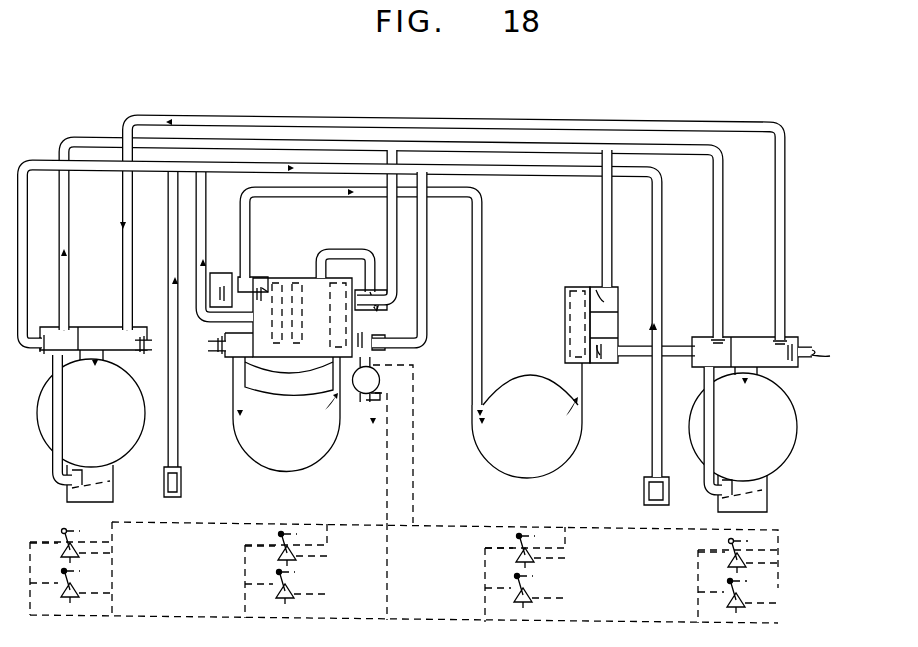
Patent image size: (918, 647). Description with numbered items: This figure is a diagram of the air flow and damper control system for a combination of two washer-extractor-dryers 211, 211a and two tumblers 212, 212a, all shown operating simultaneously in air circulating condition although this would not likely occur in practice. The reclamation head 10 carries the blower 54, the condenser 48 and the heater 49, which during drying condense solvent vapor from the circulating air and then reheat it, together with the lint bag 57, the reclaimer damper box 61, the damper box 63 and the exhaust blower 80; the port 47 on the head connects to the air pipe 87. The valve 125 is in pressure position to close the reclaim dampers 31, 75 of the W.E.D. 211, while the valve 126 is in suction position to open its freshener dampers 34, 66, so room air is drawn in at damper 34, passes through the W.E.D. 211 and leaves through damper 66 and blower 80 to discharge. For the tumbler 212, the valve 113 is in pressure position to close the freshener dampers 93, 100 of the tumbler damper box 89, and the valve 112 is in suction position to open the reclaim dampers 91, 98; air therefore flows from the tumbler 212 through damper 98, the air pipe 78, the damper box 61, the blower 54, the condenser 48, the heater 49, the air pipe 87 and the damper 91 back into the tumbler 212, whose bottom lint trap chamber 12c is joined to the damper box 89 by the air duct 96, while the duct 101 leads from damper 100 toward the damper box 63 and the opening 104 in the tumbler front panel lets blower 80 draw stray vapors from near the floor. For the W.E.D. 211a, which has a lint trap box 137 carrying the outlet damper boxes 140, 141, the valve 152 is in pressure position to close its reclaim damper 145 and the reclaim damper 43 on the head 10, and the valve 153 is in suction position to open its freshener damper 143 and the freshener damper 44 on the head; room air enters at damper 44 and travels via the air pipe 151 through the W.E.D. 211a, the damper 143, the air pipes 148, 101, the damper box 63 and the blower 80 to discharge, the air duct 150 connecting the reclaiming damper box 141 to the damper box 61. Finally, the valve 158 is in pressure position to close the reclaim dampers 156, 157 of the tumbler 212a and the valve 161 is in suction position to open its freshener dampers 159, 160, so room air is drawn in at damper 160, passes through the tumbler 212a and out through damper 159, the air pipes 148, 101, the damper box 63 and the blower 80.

The reclamation head 10 is at (270, 272).
The chamber 12c is at (113, 497).
The reclaim damper 31 is at (268, 376).
The diaphragm damper 34 is at (216, 352).
The diaphragm damper 43 is at (262, 286).
The diaphragm damper 44 is at (218, 284).
The port 47 is at (266, 288).
The condenser 48 is at (297, 318).
The heater 49 is at (283, 310).
The blower 54 is at (324, 257).
The tubular bag 57 is at (330, 342).
The reclaimer damper box 61 is at (385, 303).
The damper box 63 is at (383, 338).
The freshener damper 66 is at (362, 334).
The reclaim damper 75 is at (375, 272).
The air duct 78 is at (68, 213).
The blower 80 is at (362, 391).
The air pipe 87 is at (127, 239).
The tumbler damper box 89 is at (105, 305).
The diaphragm damper 91 is at (125, 322).
The diaphragm damper 93 is at (138, 352).
The air duct 96 is at (54, 480).
The diaphragm damper 98 is at (66, 330).
The diaphragm damper 100 is at (42, 354).
The duct 101 is at (522, 176).
The opening 104 is at (181, 491).
The valve 112 is at (82, 594).
The valve 113 is at (88, 554).
The valve 125 is at (290, 596).
The valve 126 is at (300, 558).
The lint trap box 137 is at (563, 337).
The outlet damper box 140 is at (604, 341).
The outlet damper box 141 is at (608, 294).
The diaphragm damper 143 is at (597, 362).
The diaphragm damper 145 is at (594, 287).
The air duct 148 is at (643, 357).
The air duct 150 is at (602, 218).
The air duct 151 is at (260, 198).
The pressure-vacuum valve 152 is at (530, 599).
The pressure-vacuum valve 153 is at (538, 561).
The reclaim damper 156 is at (720, 338).
The reclaim damper 157 is at (782, 340).
The valve 158 is at (750, 602).
The freshener damper 159 is at (672, 326).
The freshener damper 160 is at (790, 362).
The valve 161 is at (750, 566).
The washer-extractor-dryer 211 is at (286, 414).
The washer-extractor-dryer 211a is at (527, 420).
The tumbler 212 is at (91, 408).
The tumbler 212a is at (743, 413).